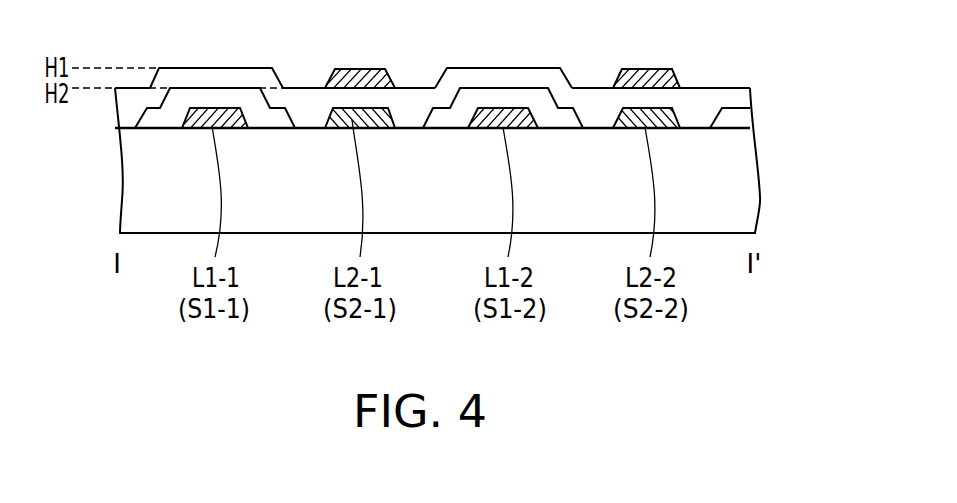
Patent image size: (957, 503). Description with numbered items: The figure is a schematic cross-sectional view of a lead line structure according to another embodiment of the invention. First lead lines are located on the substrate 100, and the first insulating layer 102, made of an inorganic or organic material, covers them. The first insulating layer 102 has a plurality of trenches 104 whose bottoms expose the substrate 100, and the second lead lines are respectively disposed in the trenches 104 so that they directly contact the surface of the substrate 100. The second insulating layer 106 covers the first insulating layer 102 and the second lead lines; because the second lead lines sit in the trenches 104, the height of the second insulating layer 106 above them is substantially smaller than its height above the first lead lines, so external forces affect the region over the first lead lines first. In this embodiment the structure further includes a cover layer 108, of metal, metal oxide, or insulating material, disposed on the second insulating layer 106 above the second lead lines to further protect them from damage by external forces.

The substrate 100 is at (747, 179).
The first insulating layer 102 is at (743, 118).
The trenches 104 is at (293, 112).
The second insulating layer 106 is at (743, 98).
The cover layer 108 is at (363, 68).